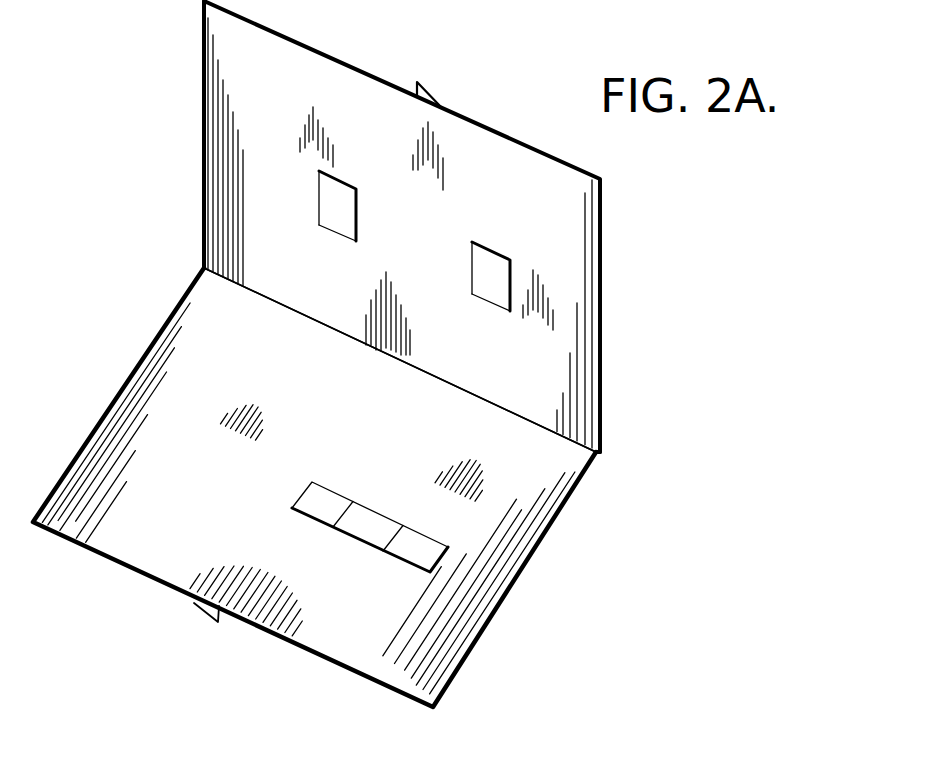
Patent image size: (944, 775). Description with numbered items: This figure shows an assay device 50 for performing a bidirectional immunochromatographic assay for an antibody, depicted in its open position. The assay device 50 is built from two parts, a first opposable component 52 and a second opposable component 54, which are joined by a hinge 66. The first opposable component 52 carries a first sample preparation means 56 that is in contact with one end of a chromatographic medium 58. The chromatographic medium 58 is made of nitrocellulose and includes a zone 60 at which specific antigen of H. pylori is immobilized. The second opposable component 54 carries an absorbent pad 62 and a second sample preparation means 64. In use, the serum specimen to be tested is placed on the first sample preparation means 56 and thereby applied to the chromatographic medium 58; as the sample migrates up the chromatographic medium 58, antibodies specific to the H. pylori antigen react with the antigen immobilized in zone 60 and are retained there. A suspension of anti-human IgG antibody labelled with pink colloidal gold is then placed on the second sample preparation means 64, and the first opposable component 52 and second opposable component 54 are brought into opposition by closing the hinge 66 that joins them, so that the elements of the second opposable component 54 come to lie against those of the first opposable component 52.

The assay device 50 is at (359, 361).
The first opposable component 52 is at (135, 538).
The second opposable component 54 is at (228, 42).
The first sample preparation means 56 is at (423, 547).
The chromatographic medium 58 is at (323, 520).
The zone 60 is at (342, 522).
The absorbent pad 62 is at (490, 270).
The second sample preparation means 64 is at (342, 201).
The hinge 66 is at (267, 300).